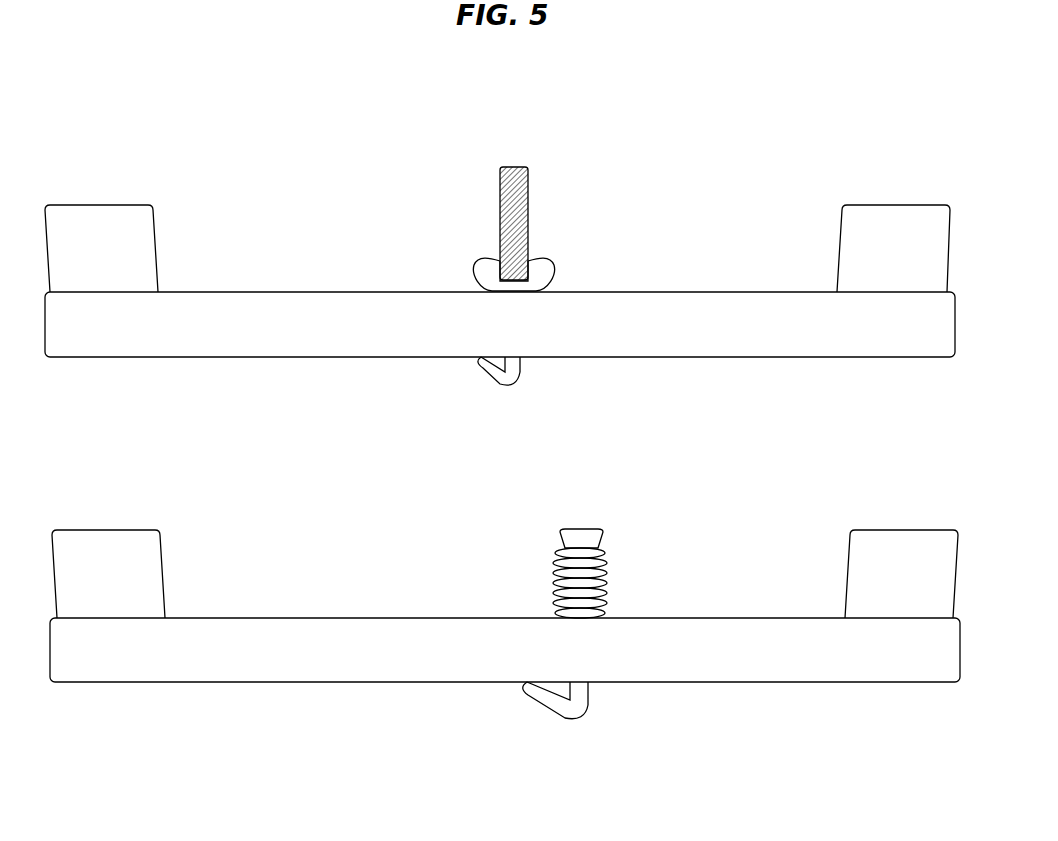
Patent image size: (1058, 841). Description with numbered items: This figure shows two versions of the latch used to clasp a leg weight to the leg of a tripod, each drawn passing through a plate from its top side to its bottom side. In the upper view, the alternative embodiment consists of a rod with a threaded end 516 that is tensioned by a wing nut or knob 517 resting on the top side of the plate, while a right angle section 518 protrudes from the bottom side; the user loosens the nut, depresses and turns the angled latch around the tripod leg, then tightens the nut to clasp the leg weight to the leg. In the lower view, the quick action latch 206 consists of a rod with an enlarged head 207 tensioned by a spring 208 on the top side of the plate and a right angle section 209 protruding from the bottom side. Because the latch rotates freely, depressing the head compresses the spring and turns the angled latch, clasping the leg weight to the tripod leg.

The threaded end 516 is at (523, 183).
The wing nut or knob 517 is at (540, 270).
The right angle section 518 is at (503, 374).
The quick action latch 206 is at (558, 740).
The enlarged head 207 is at (590, 537).
The spring 208 is at (603, 565).
The right angle section 209 is at (577, 708).